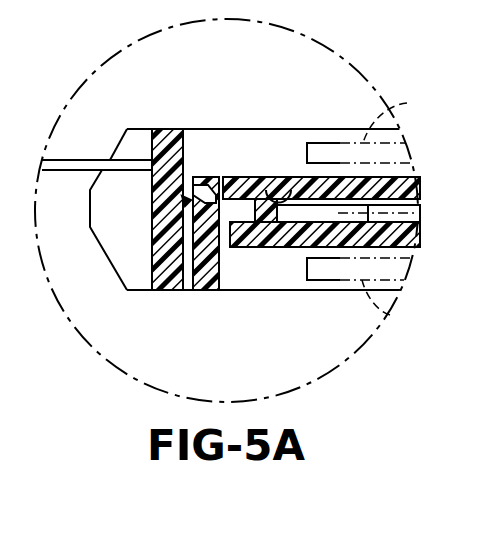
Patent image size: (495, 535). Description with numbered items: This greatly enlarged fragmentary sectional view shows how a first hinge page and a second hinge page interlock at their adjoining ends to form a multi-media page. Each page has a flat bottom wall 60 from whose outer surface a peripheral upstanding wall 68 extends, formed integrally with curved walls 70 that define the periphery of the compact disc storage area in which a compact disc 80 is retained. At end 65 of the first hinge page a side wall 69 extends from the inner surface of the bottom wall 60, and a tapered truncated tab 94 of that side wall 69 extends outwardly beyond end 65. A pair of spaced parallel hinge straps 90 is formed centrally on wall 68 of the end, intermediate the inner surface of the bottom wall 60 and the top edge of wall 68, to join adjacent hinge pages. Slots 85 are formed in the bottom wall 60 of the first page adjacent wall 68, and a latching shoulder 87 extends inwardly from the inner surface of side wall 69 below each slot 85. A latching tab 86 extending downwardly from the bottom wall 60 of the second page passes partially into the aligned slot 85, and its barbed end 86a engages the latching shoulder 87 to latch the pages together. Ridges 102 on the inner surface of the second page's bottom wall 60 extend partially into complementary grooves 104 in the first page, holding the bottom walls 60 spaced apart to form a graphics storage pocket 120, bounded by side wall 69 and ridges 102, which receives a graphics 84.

The bottom wall 60 is at (407, 173).
The end 65 is at (142, 128).
The peripheral upstanding wall 68 is at (186, 186).
The side wall 69 is at (150, 257).
The curved wall 70 is at (335, 143).
The compact disc 80 is at (407, 103).
The graphics 84 is at (418, 234).
The slot 85 is at (228, 177).
The latching tab 86 is at (217, 177).
The barbed end 86a is at (185, 200).
The latching shoulder 87 is at (186, 201).
The hinge strap 90 is at (90, 159).
The tapered truncated tab 94 is at (90, 212).
The ridge 102 is at (259, 213).
The groove 104 is at (291, 190).
The graphics storage pocket 120 is at (325, 213).